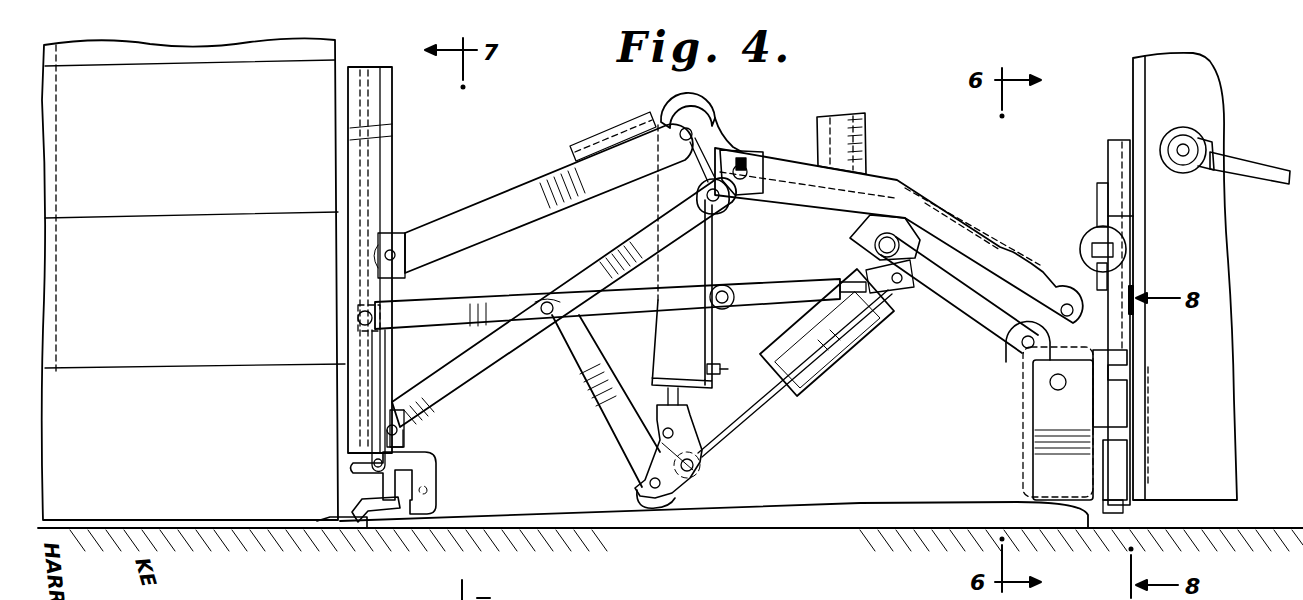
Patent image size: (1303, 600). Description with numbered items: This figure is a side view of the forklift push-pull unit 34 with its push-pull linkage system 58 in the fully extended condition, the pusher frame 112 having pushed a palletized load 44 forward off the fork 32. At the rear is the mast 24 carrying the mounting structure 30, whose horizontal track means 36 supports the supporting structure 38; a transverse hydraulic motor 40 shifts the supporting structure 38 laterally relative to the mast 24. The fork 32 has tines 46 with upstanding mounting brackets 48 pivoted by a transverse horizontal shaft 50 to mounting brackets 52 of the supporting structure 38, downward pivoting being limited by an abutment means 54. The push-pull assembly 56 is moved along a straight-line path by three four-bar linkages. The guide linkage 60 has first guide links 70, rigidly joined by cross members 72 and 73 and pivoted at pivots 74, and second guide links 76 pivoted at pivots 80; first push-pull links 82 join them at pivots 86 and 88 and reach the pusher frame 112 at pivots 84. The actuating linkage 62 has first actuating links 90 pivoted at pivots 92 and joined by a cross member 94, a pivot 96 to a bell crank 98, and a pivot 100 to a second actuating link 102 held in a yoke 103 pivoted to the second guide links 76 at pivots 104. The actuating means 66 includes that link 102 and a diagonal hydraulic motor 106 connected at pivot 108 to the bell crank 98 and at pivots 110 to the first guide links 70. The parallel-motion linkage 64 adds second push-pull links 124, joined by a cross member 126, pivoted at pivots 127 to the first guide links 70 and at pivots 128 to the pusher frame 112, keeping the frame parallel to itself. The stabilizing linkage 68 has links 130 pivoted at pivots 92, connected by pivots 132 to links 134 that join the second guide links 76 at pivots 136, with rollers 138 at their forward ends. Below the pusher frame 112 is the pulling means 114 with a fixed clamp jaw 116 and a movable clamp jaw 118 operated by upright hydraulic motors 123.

The mast 24 is at (1219, 94).
The mounting structure 30 is at (1131, 392).
The fork 32 is at (788, 532).
The push-pull unit 34 is at (885, 98).
The track means 36 is at (1115, 416).
The supporting structure 38 is at (1130, 337).
The transverse hydraulic motor 40 is at (1120, 238).
The palletized load 44 is at (320, 82).
The tines 46 is at (700, 520).
The mounting brackets 48 is at (1023, 442).
The transverse horizontal shaft 50 is at (1058, 390).
The mounting brackets 52 is at (1040, 457).
The abutment means 54 is at (1098, 490).
The push-pull assembly 56 is at (344, 136).
The push-pull linkage system 58 is at (813, 128).
The four-bar guide linkage 60 is at (917, 172).
The four-bar actuating linkage 62 is at (593, 428).
The four-bar parallel-motion linkage 64 is at (515, 172).
The actuating means 66 is at (827, 372).
The stabilizing linkage 68 is at (463, 282).
The first guide links 70 is at (975, 226).
The cross member 72 is at (870, 118).
The cross member 73 is at (690, 100).
The transverse pivots 74 is at (1068, 305).
The second guide links 76 is at (1000, 325).
The transverse pivots 80 is at (1022, 350).
The first push-pull links 82 is at (625, 252).
The transverse pivots 84 is at (402, 437).
The transverse pivots 86 is at (742, 168).
The transverse pivots 88 is at (717, 210).
The first actuating links 90 is at (585, 388).
The transverse pivots 92 is at (548, 301).
The cross member 94 is at (672, 504).
The transverse pivot 96 is at (648, 485).
The bell crank 98 is at (663, 460).
The transverse pivot 100 is at (700, 465).
The second actuating link 102 is at (845, 345).
The yoke 103 is at (870, 330).
The transverse pivots 104 is at (897, 240).
The hydraulic motor 106 is at (668, 192).
The transverse pivot 108 is at (672, 430).
The transverse pivots 110 is at (710, 110).
The pusher frame 112 is at (393, 117).
The pulling means 114 is at (364, 533).
The fixed clamp jaw 116 is at (395, 515).
The movable clamp jaw 118 is at (360, 478).
The upright hydraulic motors 123 is at (360, 390).
The second push-pull links 124 is at (478, 198).
The cross member 126 is at (597, 135).
The transverse pivots 127 is at (678, 128).
The transverse pivots 128 is at (390, 250).
The links 130 is at (463, 328).
The transverse pivots 132 is at (728, 290).
The links 134 is at (775, 302).
The transverse pivots 136 is at (883, 298).
The rollers 138 is at (358, 318).